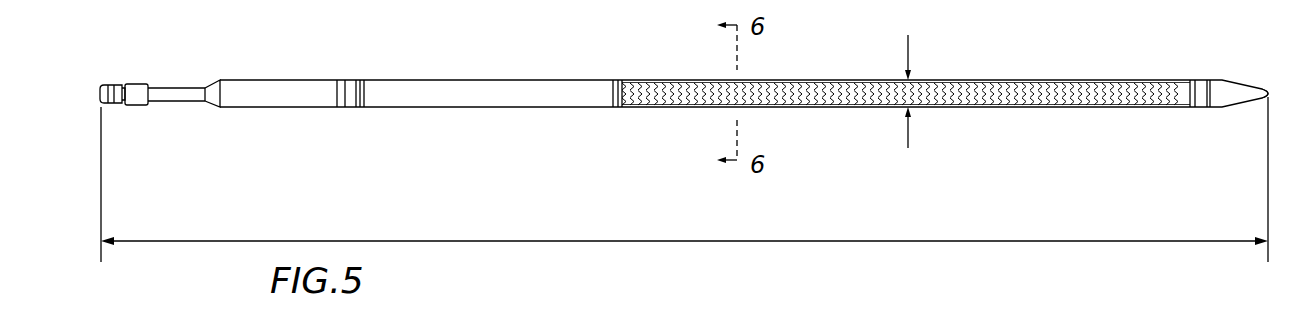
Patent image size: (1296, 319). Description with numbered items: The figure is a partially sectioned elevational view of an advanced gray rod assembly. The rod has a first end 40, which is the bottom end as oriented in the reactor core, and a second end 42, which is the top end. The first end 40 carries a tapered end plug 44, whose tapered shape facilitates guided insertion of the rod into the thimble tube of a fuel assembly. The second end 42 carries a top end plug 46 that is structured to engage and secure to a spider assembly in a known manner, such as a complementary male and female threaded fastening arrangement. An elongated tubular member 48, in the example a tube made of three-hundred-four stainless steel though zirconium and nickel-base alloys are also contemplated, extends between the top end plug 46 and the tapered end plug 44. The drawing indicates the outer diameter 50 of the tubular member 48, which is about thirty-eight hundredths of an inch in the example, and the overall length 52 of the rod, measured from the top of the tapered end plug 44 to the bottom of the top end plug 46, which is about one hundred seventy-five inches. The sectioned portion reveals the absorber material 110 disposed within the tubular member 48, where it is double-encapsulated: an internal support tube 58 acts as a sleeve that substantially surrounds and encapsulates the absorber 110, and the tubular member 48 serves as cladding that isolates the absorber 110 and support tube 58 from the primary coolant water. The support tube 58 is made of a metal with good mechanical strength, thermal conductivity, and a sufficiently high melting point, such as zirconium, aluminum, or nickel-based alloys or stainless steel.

The first end 40 is at (1251, 117).
The second end 42 is at (121, 118).
The tapered end plug 44 is at (1233, 78).
The top end plug 46 is at (277, 80).
The elongated tubular member 48 is at (503, 79).
The outer diameter 50 is at (908, 40).
The overall length 52 is at (562, 241).
The internal support tube 58 is at (685, 80).
The absorber material 110 is at (1173, 87).